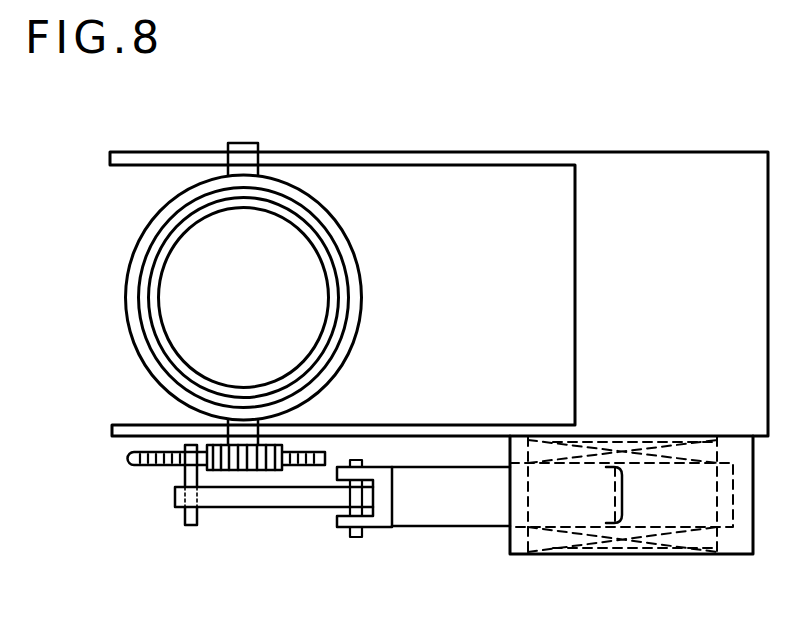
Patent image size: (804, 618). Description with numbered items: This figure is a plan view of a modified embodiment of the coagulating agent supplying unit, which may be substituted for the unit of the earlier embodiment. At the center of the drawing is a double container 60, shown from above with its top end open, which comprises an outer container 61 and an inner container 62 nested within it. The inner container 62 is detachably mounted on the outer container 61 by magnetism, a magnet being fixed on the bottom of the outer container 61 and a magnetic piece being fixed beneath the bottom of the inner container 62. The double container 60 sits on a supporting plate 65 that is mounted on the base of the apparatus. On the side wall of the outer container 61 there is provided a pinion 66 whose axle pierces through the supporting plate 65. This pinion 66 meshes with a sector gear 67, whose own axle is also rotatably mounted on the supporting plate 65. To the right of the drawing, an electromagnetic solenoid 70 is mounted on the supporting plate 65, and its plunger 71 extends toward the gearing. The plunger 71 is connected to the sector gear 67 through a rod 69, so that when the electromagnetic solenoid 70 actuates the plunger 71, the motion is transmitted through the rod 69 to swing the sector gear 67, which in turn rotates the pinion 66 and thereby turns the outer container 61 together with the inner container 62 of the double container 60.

The double container 60 is at (355, 252).
The outer container 61 is at (137, 331).
The inner container 62 is at (150, 301).
The supporting plate 65 is at (122, 434).
The pinion 66 is at (243, 471).
The sector gear 67 is at (303, 465).
The rod 69 is at (188, 524).
The electromagnetic solenoid 70 is at (738, 540).
The plunger 71 is at (460, 510).